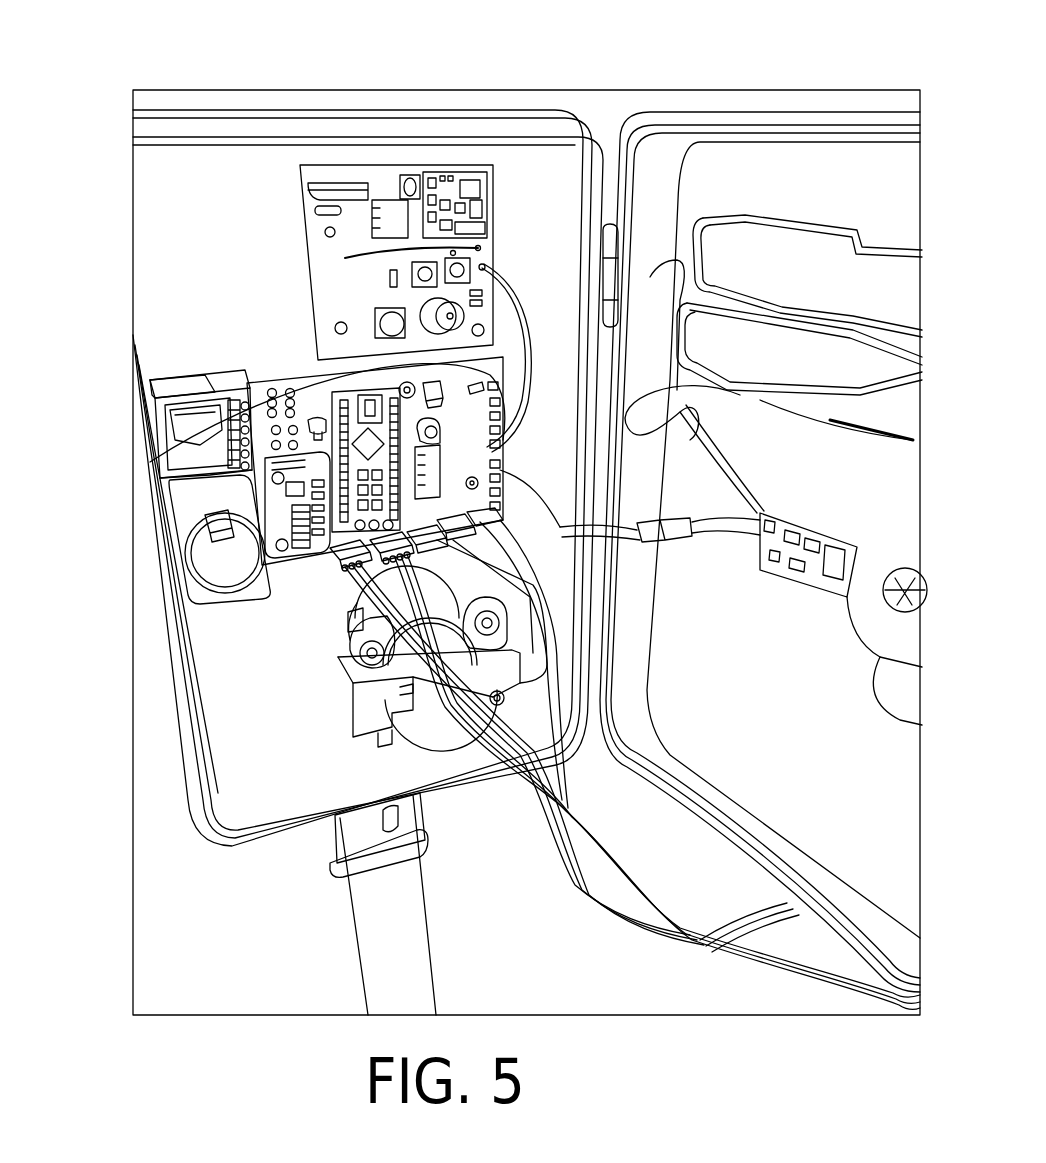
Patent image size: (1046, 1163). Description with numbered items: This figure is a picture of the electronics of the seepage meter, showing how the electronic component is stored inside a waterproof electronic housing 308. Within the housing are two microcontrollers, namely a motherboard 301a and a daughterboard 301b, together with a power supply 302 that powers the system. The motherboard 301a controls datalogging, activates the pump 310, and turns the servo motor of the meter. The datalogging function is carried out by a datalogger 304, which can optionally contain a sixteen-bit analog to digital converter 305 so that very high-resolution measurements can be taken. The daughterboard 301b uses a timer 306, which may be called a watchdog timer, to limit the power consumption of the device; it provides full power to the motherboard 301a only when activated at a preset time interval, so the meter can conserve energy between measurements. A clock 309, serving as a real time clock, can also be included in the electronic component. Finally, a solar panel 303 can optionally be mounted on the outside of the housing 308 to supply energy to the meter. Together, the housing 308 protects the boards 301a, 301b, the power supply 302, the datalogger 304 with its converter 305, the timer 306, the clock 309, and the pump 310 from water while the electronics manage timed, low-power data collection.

The motherboard 301a is at (265, 425).
The daughterboard 301b is at (333, 227).
The timer 306 is at (327, 257).
The power supply 302 is at (800, 270).
The solar panel 303 is at (130, 100).
The datalogger 304 is at (128, 417).
The 16-bit analog to digital converter 305 is at (203, 440).
The waterproof electronic housing 308 is at (210, 236).
The clock 309 is at (217, 564).
The pump 310 is at (367, 707).